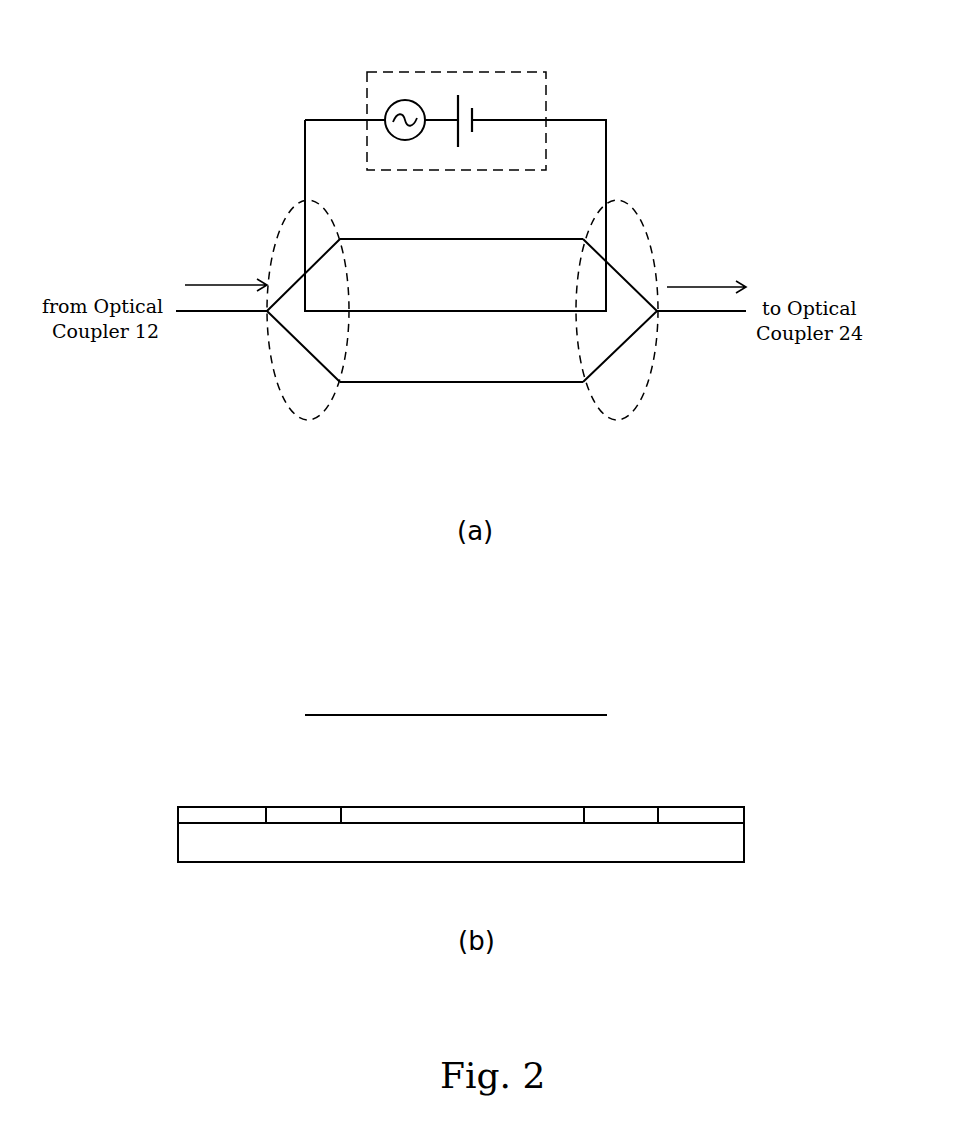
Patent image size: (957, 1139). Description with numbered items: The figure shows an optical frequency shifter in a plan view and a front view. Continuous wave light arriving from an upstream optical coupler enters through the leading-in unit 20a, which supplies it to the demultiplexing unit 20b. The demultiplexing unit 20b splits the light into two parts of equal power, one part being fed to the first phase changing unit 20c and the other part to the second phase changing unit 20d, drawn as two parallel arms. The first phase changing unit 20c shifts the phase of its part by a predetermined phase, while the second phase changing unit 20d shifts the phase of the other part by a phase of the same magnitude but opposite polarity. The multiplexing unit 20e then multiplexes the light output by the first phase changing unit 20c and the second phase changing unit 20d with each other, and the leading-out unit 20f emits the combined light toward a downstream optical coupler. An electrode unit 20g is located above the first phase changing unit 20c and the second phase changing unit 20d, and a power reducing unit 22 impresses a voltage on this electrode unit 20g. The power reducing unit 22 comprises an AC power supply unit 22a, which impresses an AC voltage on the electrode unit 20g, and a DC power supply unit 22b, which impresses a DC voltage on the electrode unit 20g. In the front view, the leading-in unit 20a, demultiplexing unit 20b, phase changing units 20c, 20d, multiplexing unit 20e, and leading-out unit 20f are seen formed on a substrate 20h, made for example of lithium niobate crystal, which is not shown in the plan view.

The leading-in unit 20a is at (200, 313).
The demultiplexing unit 20b is at (273, 378).
The first phase changing unit 20c is at (457, 239).
The second phase changing unit 20d is at (470, 385).
The multiplexing unit 20e is at (648, 232).
The leading-out unit 20f is at (698, 313).
The electrode unit 20g is at (433, 311).
The substrate 20h is at (738, 840).
The power reducing unit 22 is at (497, 68).
The AC power supply unit 22a is at (395, 99).
The DC power supply unit 22b is at (458, 95).